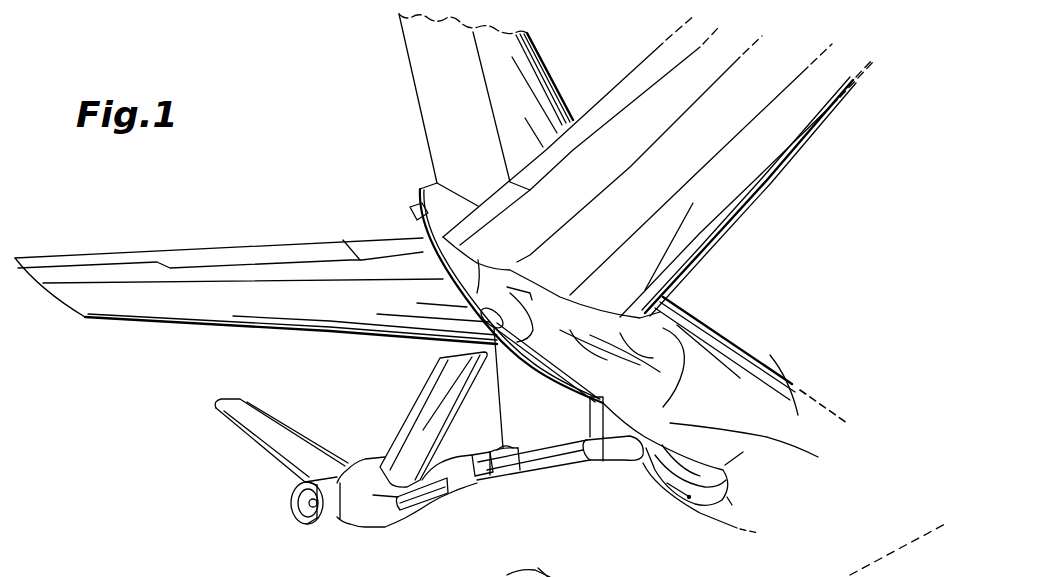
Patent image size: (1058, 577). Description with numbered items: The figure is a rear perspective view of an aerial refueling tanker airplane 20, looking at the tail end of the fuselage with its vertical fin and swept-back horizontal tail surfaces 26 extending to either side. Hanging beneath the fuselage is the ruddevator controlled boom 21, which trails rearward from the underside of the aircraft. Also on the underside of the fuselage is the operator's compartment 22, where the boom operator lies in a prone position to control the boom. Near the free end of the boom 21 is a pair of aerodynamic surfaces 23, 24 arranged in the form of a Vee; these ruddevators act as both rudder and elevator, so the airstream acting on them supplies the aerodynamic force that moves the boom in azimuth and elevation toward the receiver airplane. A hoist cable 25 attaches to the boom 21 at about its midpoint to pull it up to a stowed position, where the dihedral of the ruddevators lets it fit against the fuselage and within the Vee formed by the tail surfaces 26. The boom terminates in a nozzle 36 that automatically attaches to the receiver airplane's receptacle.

The aerial refueling tanker airplane 20 is at (763, 347).
The ruddevator controlled boom 21 is at (531, 478).
The operator's compartment 22 is at (707, 483).
The aerodynamic surface (ruddevator) 23 is at (278, 416).
The aerodynamic surface (ruddevator) 24 is at (433, 377).
The hoist cable 25 is at (505, 418).
The swept-back horizontal tail surfaces 26 is at (133, 318).
The nozzle 36 is at (298, 502).